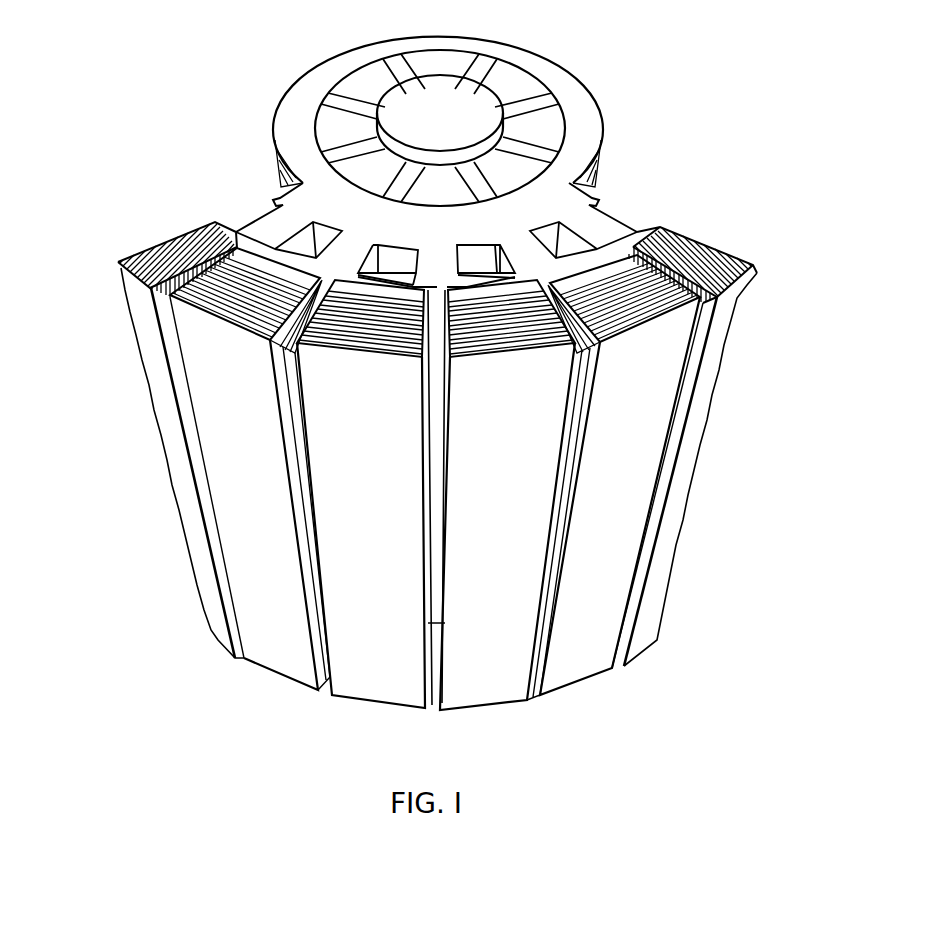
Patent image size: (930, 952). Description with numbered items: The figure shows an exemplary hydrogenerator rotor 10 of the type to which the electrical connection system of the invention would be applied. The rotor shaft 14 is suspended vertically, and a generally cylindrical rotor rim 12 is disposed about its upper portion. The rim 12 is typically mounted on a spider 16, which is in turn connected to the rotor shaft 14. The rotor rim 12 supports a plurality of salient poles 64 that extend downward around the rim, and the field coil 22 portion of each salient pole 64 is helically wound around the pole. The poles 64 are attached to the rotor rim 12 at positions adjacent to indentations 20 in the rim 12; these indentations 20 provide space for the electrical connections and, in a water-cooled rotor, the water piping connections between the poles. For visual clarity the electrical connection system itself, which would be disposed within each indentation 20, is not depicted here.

The hydrogenerator rotor 10 is at (616, 27).
The rotor rim 12 is at (598, 131).
The rotor shaft 14 is at (436, 92).
The spider 16 is at (549, 105).
The indentations 20 is at (383, 218).
The field coil 22 is at (173, 242).
The salient poles 64 is at (222, 605).